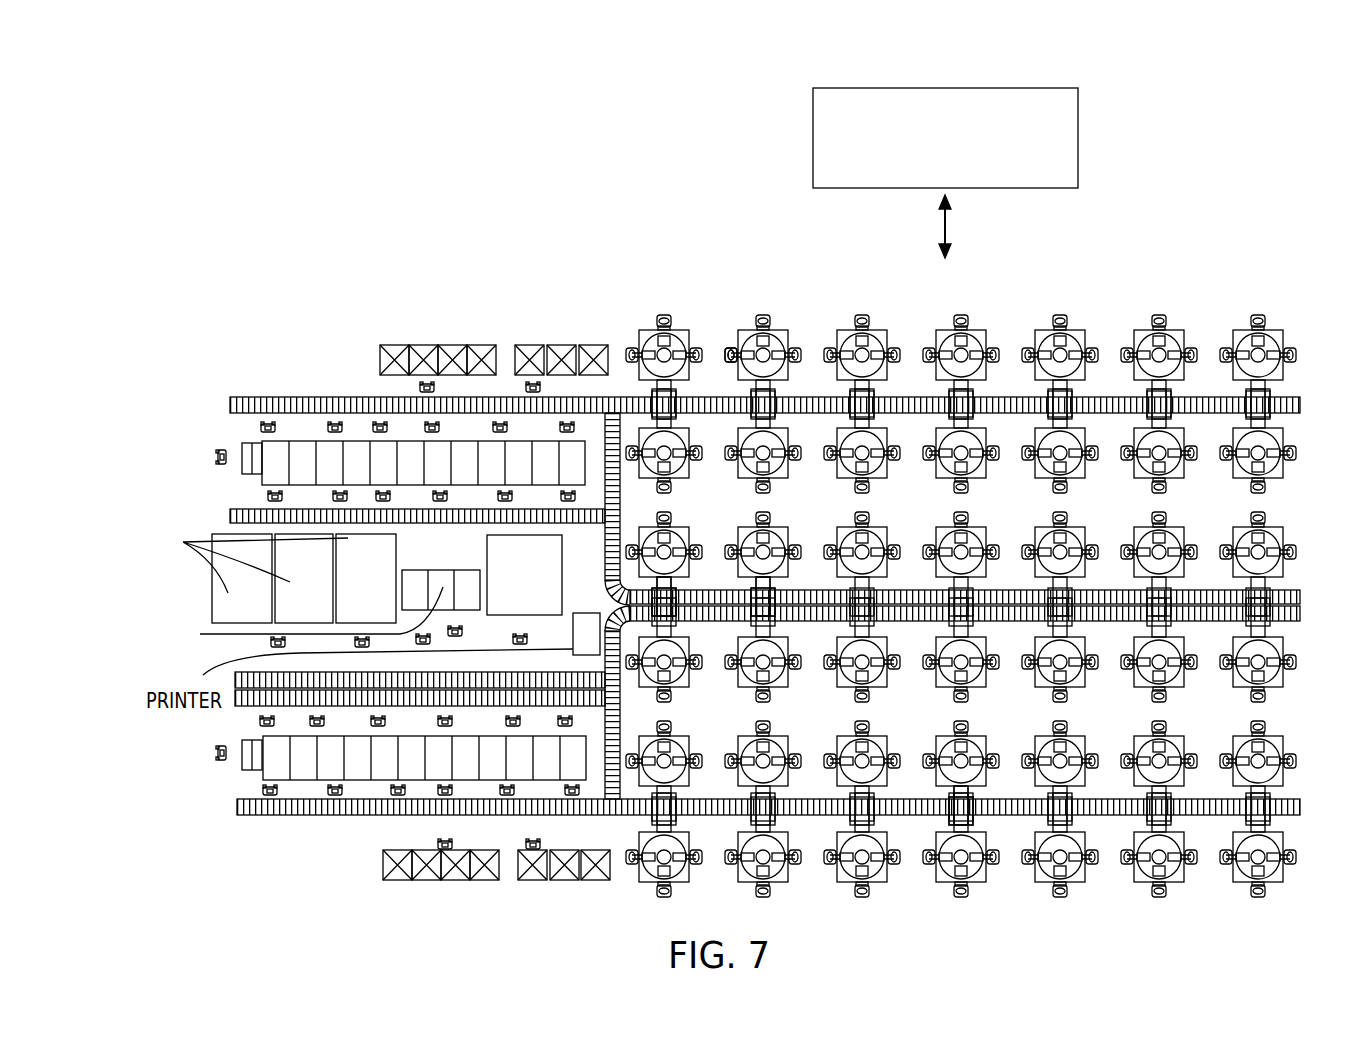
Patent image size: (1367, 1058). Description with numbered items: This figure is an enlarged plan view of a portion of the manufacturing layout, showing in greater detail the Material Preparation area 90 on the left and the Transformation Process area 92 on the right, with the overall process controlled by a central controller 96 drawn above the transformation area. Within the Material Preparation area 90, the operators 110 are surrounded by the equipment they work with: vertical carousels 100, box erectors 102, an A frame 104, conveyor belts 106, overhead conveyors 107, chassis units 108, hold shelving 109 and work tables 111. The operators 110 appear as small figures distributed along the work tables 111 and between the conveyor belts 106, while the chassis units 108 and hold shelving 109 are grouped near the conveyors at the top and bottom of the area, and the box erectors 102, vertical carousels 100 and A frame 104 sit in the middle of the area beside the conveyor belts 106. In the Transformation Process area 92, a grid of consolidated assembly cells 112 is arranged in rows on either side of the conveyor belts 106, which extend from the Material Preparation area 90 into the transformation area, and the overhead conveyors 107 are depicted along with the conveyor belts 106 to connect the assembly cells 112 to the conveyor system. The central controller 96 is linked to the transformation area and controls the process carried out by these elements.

The Material Preparation area 90 is at (437, 278).
The Transformation Process area 92 is at (1046, 277).
The central controller 96 is at (815, 128).
The vertical carousel 100 is at (467, 577).
The box erector 102 is at (212, 606).
The A frame 104 is at (563, 553).
The conveyor belt 106 is at (237, 396).
The overhead conveyor 107 is at (730, 352).
The chassis unit 108 is at (452, 881).
The hold shelving 109 is at (565, 881).
The operator 110 is at (535, 384).
The work table 111 is at (411, 474).
The consolidated assembly cell 112 is at (1298, 552).